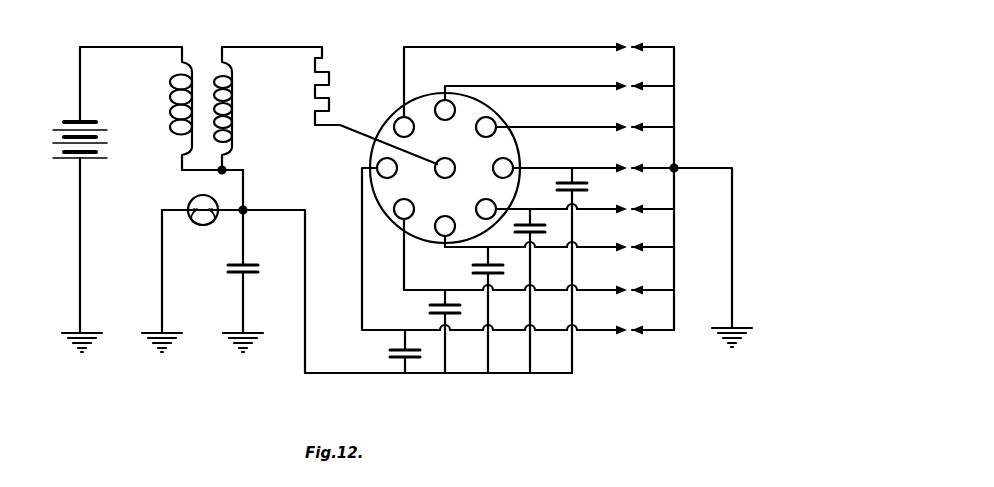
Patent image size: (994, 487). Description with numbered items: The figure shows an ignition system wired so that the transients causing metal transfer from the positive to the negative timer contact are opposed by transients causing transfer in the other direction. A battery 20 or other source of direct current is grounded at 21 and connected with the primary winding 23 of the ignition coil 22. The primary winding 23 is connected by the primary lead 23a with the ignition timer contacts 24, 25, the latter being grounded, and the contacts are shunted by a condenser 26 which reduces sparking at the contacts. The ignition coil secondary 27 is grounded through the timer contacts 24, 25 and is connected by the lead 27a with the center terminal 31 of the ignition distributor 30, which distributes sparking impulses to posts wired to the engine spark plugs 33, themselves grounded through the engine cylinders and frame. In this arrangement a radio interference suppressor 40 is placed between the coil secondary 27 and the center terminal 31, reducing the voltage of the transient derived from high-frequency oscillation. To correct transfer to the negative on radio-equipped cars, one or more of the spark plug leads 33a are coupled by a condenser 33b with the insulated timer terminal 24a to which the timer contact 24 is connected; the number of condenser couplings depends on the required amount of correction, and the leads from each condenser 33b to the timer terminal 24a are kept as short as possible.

The battery 20 is at (54, 139).
The ground 21 is at (72, 345).
The ignition coil 22 is at (197, 95).
The primary winding 23 is at (170, 99).
The primary lead 23a is at (245, 188).
The ignition timer contact 24 is at (212, 226).
The timer terminal 24a is at (246, 214).
The ignition timer contact 25 is at (194, 226).
The condenser 26 is at (226, 272).
The secondary winding 27 is at (234, 101).
The secondary lead 27a is at (273, 47).
The ignition distributor 30 is at (432, 95).
The center terminal 31 is at (445, 158).
The spark plugs 33 is at (629, 44).
The spark plug leads 33a is at (530, 46).
The condenser 33b is at (589, 187).
The interference suppressor 40 is at (332, 80).